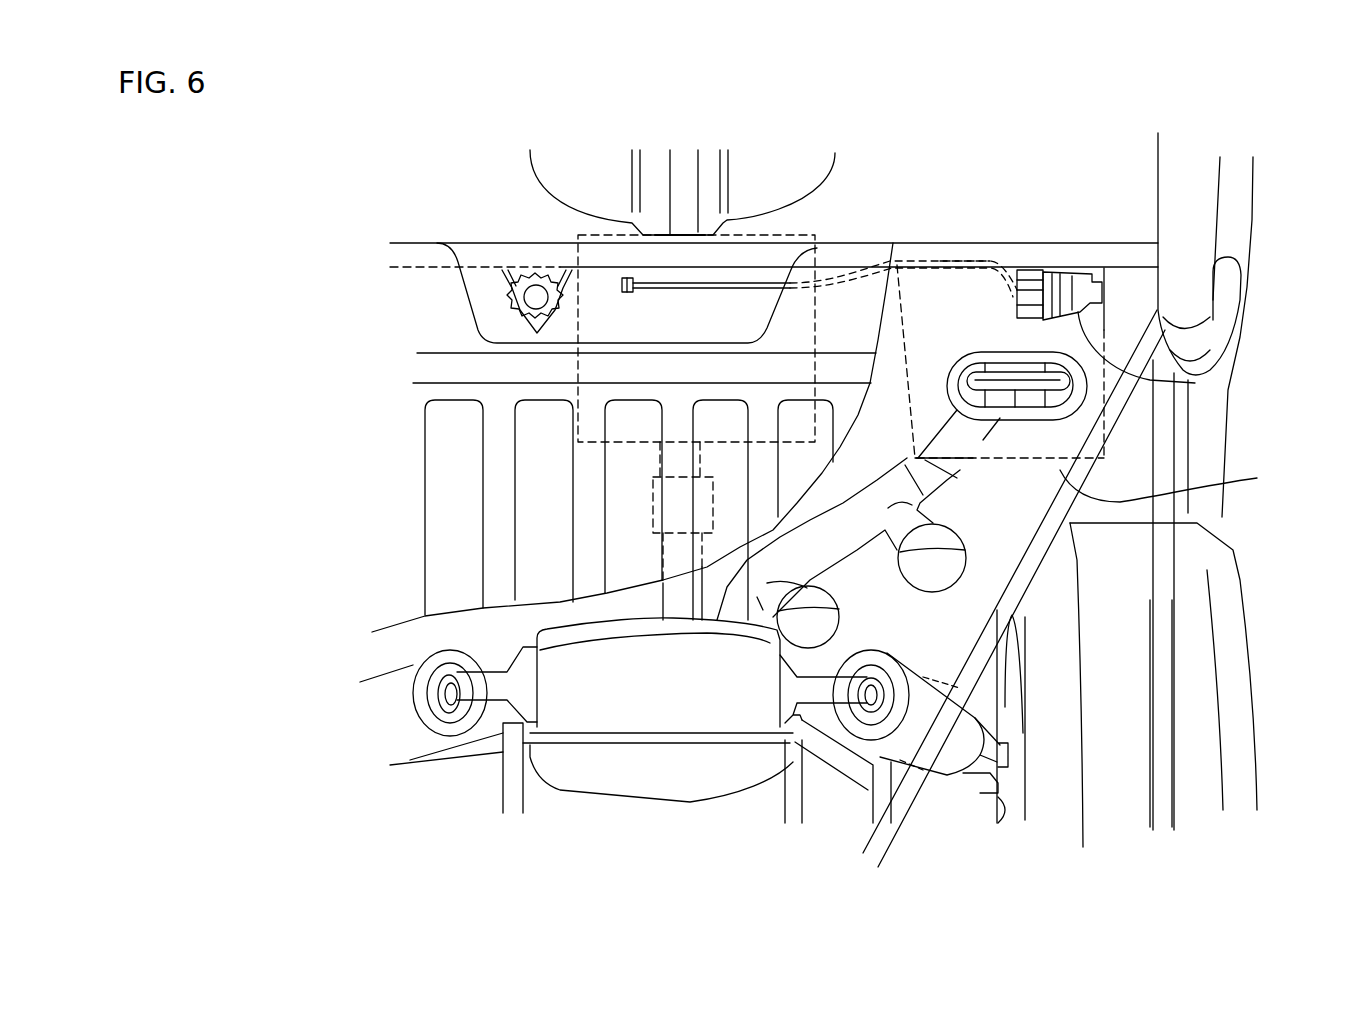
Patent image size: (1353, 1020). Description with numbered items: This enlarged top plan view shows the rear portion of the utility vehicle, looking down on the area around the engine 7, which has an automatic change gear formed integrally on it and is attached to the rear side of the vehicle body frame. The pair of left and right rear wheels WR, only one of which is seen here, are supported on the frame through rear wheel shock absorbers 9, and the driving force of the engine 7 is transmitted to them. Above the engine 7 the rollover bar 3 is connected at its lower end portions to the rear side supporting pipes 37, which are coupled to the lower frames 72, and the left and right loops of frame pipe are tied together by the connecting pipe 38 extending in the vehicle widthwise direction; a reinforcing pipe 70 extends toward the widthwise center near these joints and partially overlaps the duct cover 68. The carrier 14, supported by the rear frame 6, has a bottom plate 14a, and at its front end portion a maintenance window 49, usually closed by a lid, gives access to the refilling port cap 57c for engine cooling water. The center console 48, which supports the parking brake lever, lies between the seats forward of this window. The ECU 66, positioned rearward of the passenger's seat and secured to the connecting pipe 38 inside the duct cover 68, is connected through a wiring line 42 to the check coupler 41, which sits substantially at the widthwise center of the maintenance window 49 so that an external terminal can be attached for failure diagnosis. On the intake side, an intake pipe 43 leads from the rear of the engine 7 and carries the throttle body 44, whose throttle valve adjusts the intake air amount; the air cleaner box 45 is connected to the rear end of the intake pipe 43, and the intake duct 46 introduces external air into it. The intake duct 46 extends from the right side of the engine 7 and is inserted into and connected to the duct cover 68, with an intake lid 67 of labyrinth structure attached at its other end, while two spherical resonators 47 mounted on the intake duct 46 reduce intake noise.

The rollover bar 3 is at (1173, 158).
The rear frame 6 is at (1167, 635).
The engine 7 is at (880, 350).
The rear wheel shock absorbers 9 is at (400, 752).
The carrier 14 is at (443, 428).
The bottom plate 14a is at (435, 460).
The rear side supporting pipes 37 is at (1220, 340).
The connecting pipe 38 is at (1083, 250).
The check coupler 41 is at (623, 278).
The wiring line 42 is at (943, 257).
The intake pipe 43 is at (670, 597).
The throttle body 44 is at (653, 503).
The air cleaner box 45 is at (718, 713).
The intake duct 46 is at (957, 478).
The spherical resonators 47 is at (823, 632).
The center console 48 is at (737, 180).
The maintenance window 49 is at (730, 300).
The refilling port cap 57c is at (533, 293).
The ECU 66 is at (1137, 378).
The intake lid 67 is at (950, 362).
The duct cover 68 is at (1262, 477).
The reinforcing pipe 70 is at (1117, 407).
The lower frames 72 is at (1240, 213).
The rear wheels WR is at (1230, 573).